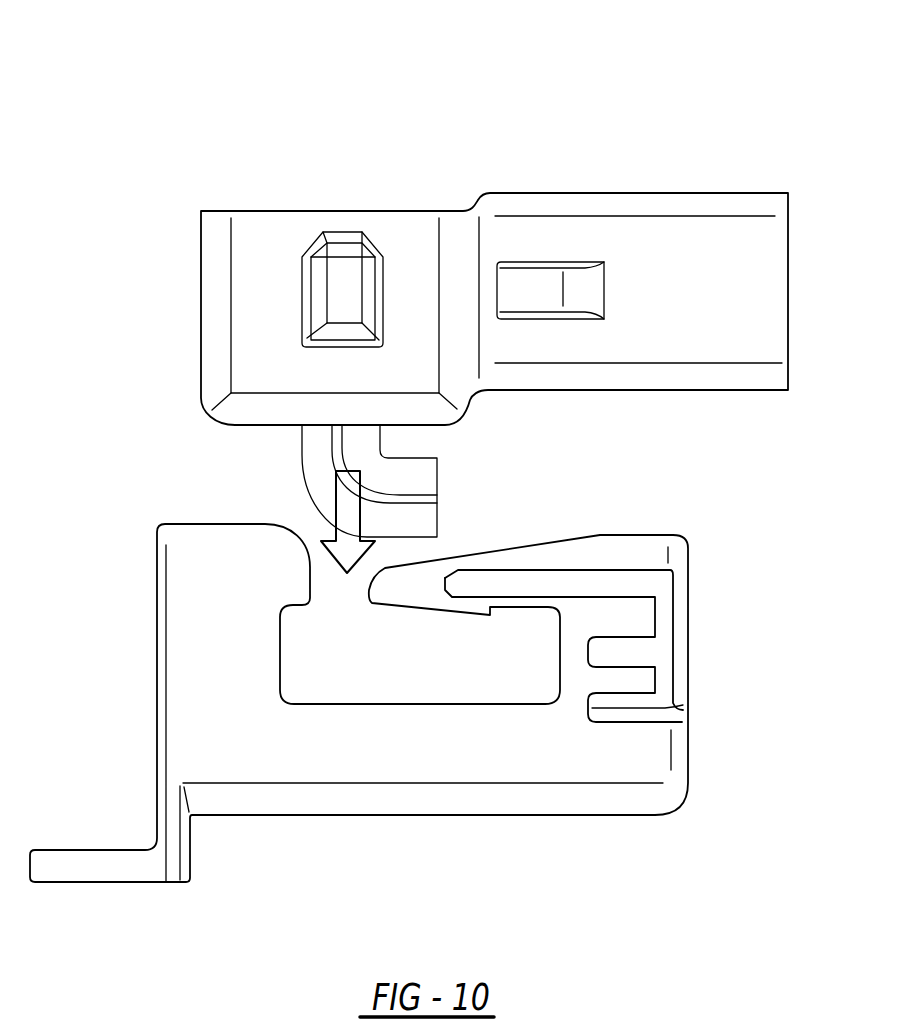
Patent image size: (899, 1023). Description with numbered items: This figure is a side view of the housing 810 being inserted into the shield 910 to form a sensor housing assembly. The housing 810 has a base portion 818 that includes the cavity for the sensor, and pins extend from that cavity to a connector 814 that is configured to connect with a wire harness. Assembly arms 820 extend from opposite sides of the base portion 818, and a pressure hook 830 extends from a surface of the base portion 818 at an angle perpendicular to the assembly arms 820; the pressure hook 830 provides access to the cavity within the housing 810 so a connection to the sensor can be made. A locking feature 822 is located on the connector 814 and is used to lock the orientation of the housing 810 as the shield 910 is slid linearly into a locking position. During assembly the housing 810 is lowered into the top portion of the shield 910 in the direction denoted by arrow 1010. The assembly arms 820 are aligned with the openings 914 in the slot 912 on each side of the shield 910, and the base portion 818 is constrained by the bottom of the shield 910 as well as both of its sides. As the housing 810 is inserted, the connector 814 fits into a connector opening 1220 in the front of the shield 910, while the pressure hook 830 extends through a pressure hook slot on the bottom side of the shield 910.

The housing 810 is at (268, 260).
The connector 814 is at (753, 192).
The base portion 818 is at (200, 308).
The assembly arms 820 is at (345, 273).
The locking feature 822 is at (527, 288).
The pressure hook 830 is at (437, 478).
The arrow 1010 is at (335, 497).
The shield 910 is at (243, 702).
The slot 912 is at (512, 665).
The openings 914 is at (348, 617).
The connector opening 1220 is at (687, 752).